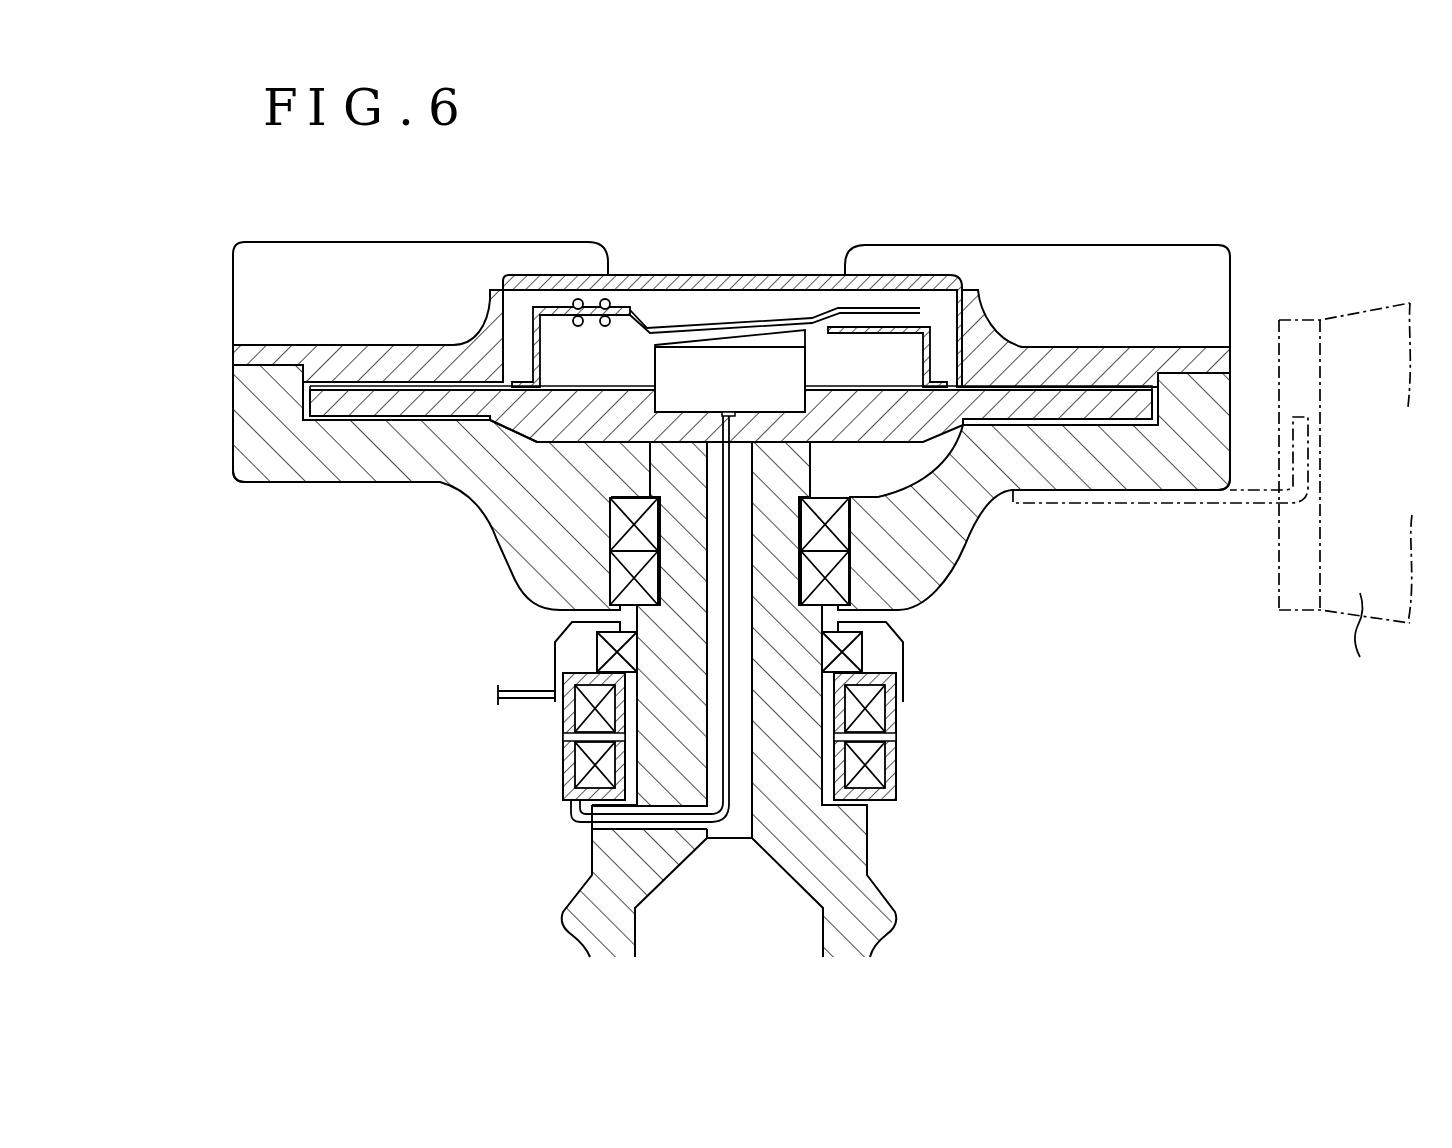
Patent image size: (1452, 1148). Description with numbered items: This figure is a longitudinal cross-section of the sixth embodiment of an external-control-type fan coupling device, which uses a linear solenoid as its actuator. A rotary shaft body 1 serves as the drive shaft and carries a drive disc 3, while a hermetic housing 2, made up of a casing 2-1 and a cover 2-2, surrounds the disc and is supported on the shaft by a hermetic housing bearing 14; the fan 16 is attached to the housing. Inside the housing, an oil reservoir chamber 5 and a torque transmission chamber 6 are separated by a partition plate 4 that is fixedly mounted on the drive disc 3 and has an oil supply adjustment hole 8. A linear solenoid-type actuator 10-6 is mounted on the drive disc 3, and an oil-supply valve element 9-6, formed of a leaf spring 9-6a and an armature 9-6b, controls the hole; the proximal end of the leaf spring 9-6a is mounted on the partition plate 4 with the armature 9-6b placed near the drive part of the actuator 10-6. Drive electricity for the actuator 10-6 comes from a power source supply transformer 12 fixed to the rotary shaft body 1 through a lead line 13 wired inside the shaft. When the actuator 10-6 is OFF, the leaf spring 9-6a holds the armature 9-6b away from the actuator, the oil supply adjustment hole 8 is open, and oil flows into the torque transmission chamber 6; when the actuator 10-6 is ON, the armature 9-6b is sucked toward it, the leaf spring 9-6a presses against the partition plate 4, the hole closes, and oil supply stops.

The rotary shaft body 1 is at (590, 878).
The hermetic housing 2 is at (1157, 222).
The casing 2-1 is at (332, 477).
The cover 2-2 is at (240, 349).
The drive disc 3 is at (401, 397).
The partition plate 4 is at (948, 350).
The oil reservoir chamber 5 is at (520, 300).
The torque transmission chamber 6 is at (580, 468).
The oil supply adjustment hole 8 is at (893, 325).
The oil-supply valve element 9-6 is at (720, 300).
The leaf spring 9-6a is at (765, 330).
The armature 9-6b is at (668, 340).
The linear solenoid-type actuator 10-6 is at (688, 363).
The power source supply transformer 12 is at (918, 749).
The lead line 13 is at (750, 808).
The hermetic housing bearing 14 is at (620, 580).
The fan 16 is at (1212, 498).